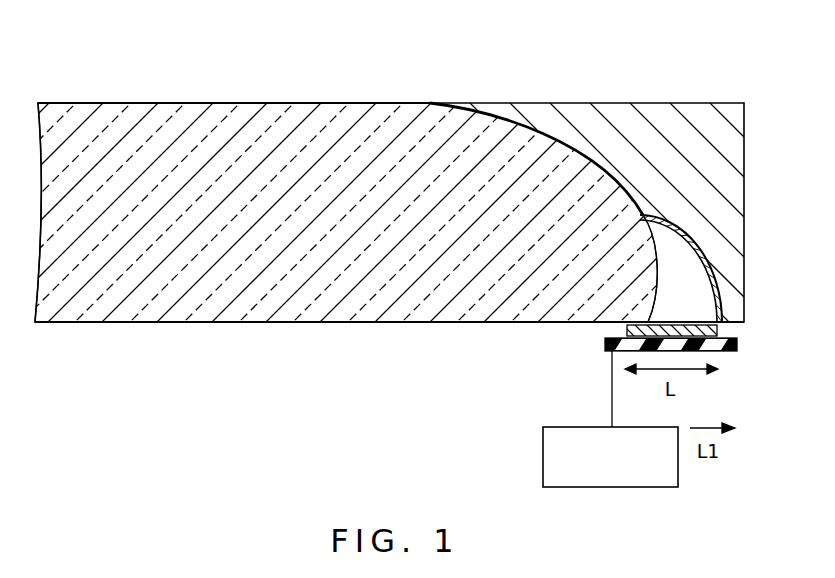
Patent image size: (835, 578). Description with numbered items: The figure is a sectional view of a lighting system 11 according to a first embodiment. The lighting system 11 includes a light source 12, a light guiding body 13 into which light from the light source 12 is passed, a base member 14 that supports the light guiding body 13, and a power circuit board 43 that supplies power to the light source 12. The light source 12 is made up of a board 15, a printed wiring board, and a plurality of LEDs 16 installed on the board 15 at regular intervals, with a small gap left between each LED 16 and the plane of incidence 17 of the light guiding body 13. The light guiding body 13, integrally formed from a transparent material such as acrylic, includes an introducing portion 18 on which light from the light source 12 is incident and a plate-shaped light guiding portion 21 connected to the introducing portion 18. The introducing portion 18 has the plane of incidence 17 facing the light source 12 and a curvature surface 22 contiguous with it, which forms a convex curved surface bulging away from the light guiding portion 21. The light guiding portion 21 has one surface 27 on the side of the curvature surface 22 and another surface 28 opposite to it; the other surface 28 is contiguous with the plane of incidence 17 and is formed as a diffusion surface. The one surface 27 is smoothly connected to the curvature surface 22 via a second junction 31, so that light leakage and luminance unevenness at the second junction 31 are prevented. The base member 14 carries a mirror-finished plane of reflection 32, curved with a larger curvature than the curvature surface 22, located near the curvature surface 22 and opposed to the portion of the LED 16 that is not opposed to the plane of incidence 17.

The lighting system 11 is at (619, 57).
The light source 12 is at (656, 353).
The light guiding body 13 is at (327, 160).
The base member 14 is at (703, 118).
The board 15 is at (737, 346).
The LED 16 is at (717, 328).
The plane of incidence 17 is at (610, 326).
The introducing portion 18 is at (545, 222).
The light guiding portion 21 is at (228, 165).
The curvature surface 22 is at (655, 252).
The one surface 27 is at (145, 103).
The other surface 28 is at (170, 323).
The second junction 31 is at (412, 103).
The plane of reflection 32 is at (710, 260).
The power circuit board 43 is at (543, 448).